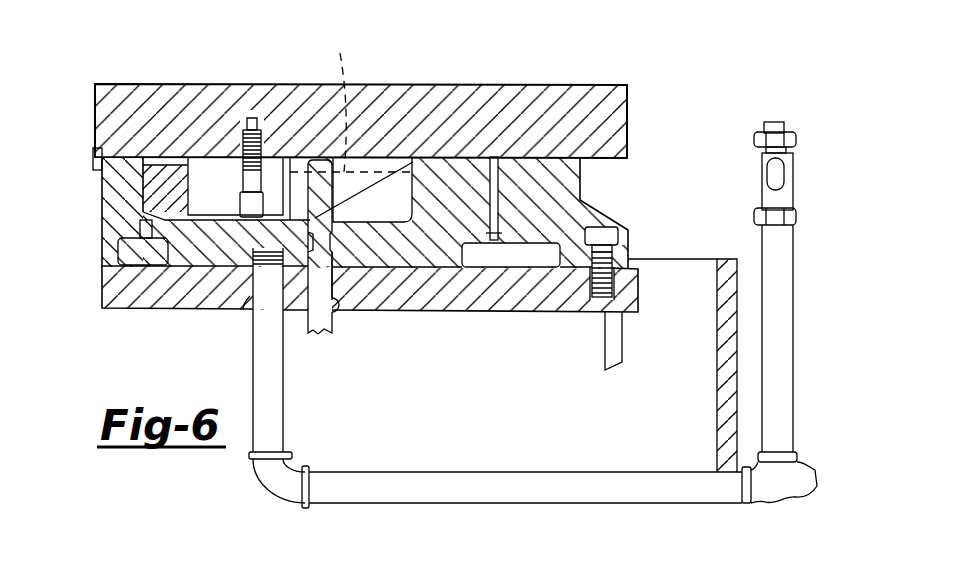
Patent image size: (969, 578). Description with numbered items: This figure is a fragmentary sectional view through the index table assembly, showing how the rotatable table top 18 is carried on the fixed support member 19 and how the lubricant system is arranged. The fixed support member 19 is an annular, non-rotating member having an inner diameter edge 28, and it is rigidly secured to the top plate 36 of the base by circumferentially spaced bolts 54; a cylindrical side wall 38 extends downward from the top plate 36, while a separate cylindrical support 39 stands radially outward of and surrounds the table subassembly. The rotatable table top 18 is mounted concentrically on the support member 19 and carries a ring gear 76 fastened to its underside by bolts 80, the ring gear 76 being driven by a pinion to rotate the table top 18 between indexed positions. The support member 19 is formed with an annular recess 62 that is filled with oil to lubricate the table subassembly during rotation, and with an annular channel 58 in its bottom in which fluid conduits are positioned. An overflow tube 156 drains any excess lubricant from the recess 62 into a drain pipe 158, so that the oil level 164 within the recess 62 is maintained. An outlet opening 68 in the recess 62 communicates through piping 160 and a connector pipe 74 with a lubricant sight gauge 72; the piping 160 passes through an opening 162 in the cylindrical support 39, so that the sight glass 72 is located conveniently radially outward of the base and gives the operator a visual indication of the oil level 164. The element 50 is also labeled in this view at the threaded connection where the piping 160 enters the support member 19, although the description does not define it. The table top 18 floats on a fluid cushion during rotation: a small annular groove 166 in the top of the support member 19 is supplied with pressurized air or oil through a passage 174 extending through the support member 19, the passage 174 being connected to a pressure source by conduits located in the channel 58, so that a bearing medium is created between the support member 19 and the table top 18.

The rotatable table top 18 is at (608, 129).
The fixed support member 19 is at (567, 200).
The inner diameter edge 28 is at (102, 220).
The top plate 36 is at (625, 295).
The cylindrical side wall 38 is at (613, 340).
The cylindrical support 39 is at (717, 378).
The threaded connection 50 is at (250, 308).
The bolt 54 is at (598, 232).
The annular channel 58 is at (511, 255).
The annular recess 62 is at (395, 177).
The outlet opening 68 is at (227, 310).
The lubricant sight gauge 72 is at (762, 178).
The connector pipe 74 is at (558, 470).
The ring gear 76 is at (216, 162).
The bolt 80 is at (252, 118).
The overflow tube 156 is at (330, 188).
The drain pipe 158 is at (332, 322).
The piping 160 is at (285, 370).
The opening 162 is at (727, 462).
The oil level 164 is at (351, 100).
The annular groove 166 is at (494, 157).
The passage 174 is at (490, 200).